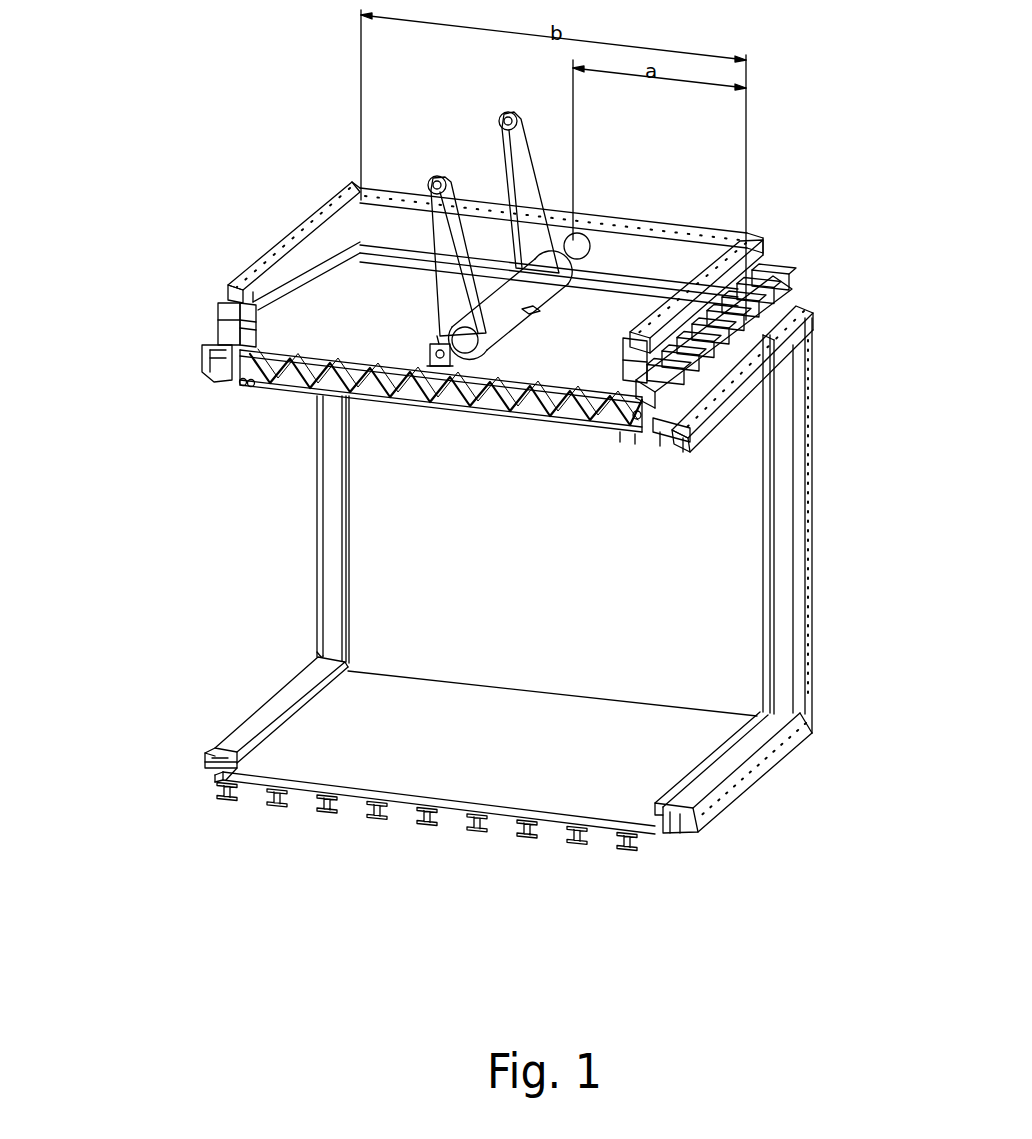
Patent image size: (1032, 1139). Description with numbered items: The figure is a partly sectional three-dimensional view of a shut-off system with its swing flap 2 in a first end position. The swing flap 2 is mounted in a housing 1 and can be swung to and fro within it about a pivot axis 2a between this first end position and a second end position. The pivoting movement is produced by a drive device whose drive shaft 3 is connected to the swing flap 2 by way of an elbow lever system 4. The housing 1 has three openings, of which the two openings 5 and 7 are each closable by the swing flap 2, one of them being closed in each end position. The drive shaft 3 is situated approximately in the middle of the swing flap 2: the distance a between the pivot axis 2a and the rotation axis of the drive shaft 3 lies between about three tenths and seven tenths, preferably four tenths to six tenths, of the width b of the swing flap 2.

The housing 1 is at (750, 245).
The swing flap 2 is at (355, 305).
The pivot axis 2a is at (663, 407).
The drive shaft 3 is at (565, 258).
The elbow lever system 4 is at (440, 198).
The opening 5 is at (268, 563).
The opening 7 is at (718, 583).